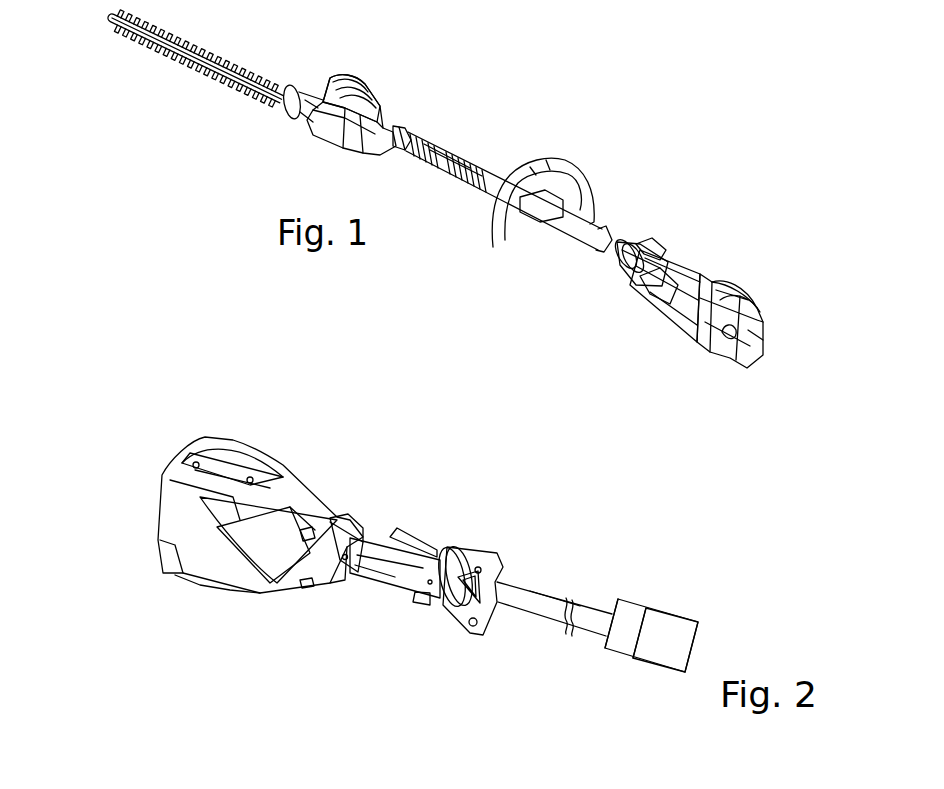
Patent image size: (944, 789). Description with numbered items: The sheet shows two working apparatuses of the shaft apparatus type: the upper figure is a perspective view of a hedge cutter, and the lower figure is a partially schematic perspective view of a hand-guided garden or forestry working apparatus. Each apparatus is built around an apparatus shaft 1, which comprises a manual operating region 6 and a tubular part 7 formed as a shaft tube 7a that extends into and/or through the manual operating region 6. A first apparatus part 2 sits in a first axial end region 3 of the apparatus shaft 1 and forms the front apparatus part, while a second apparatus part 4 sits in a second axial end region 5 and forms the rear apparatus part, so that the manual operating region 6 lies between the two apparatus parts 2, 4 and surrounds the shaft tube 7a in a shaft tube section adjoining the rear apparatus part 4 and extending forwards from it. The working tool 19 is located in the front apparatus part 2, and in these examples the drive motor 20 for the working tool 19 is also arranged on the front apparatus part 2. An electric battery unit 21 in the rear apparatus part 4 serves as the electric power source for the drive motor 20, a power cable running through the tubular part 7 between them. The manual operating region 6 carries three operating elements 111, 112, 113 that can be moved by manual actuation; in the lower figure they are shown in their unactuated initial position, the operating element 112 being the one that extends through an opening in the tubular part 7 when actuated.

In FIG. 1, the apparatus shaft 1 is at (557, 218).
In FIG. 2, the apparatus shaft 1 is at (519, 600).
In FIG. 1, the first apparatus part 2 is at (323, 104).
In FIG. 2, the first apparatus part 2 is at (665, 610).
In FIG. 1, the first axial end region 3 is at (398, 128).
In FIG. 2, the first axial end region 3 is at (605, 635).
In FIG. 1, the second apparatus part 4 is at (705, 340).
In FIG. 2, the second apparatus part 4 is at (208, 563).
In FIG. 1, the second axial end region 5 is at (632, 257).
In FIG. 2, the second axial end region 5 is at (346, 575).
In FIG. 1, the manual operating region 6 is at (668, 272).
In FIG. 2, the manual operating region 6 is at (388, 572).
In FIG. 1, the tubular part 7 is at (575, 227).
In FIG. 2, the tubular part 7 is at (510, 612).
In FIG. 2, the shaft tube 7a is at (543, 598).
In FIG. 1, the working tool 19 is at (280, 88).
In FIG. 2, the working tool 19 is at (665, 655).
In FIG. 1, the drive motor 20 is at (350, 78).
In FIG. 2, the drive motor 20 is at (620, 648).
In FIG. 1, the electric battery unit 21 is at (723, 297).
In FIG. 2, the electric battery unit 21 is at (225, 478).
In FIG. 1, the operating element 111 is at (655, 280).
In FIG. 2, the operating element 111 is at (420, 600).
In FIG. 1, the operating element 112 is at (642, 247).
In FIG. 2, the operating element 112 is at (398, 532).
In FIG. 1, the operating element 113 is at (653, 258).
In FIG. 2, the operating element 113 is at (463, 548).